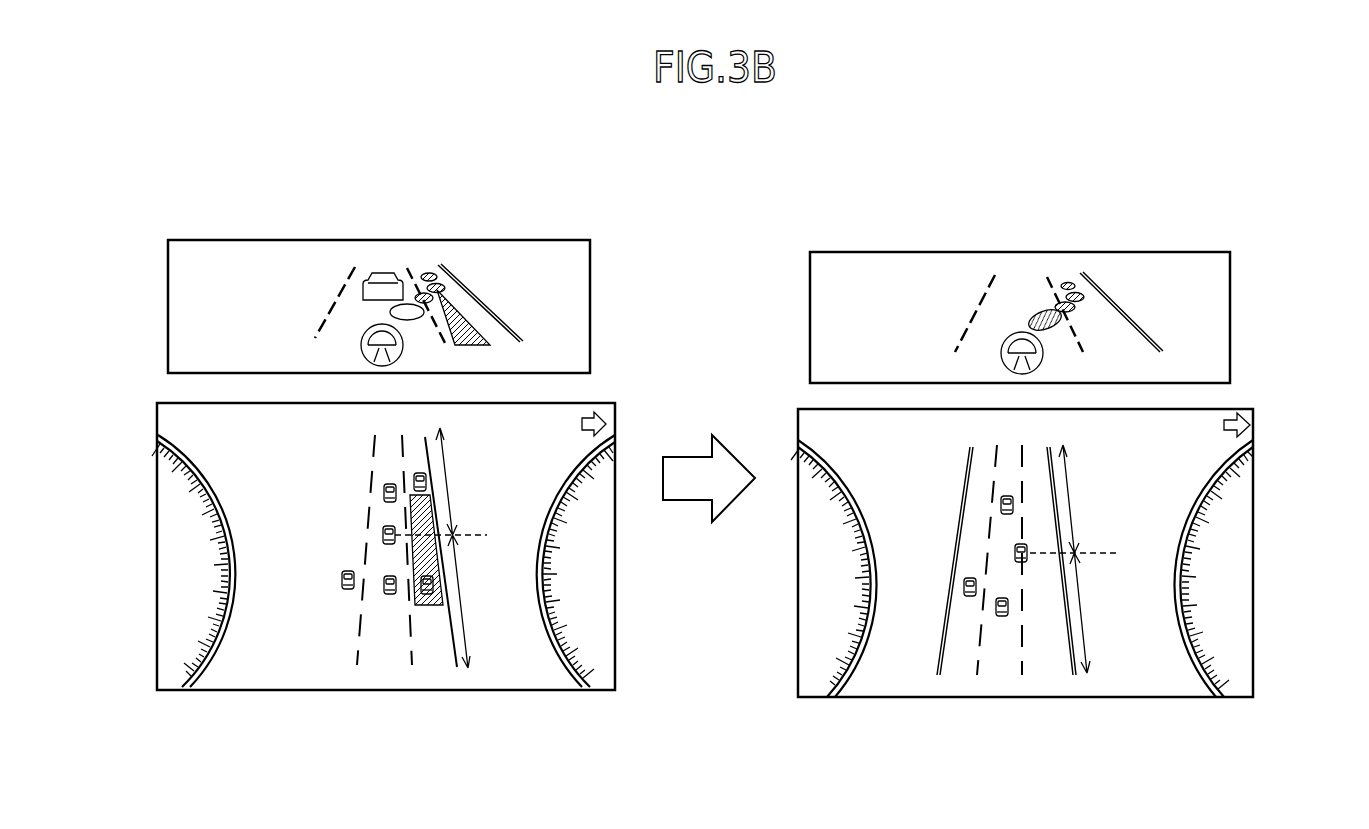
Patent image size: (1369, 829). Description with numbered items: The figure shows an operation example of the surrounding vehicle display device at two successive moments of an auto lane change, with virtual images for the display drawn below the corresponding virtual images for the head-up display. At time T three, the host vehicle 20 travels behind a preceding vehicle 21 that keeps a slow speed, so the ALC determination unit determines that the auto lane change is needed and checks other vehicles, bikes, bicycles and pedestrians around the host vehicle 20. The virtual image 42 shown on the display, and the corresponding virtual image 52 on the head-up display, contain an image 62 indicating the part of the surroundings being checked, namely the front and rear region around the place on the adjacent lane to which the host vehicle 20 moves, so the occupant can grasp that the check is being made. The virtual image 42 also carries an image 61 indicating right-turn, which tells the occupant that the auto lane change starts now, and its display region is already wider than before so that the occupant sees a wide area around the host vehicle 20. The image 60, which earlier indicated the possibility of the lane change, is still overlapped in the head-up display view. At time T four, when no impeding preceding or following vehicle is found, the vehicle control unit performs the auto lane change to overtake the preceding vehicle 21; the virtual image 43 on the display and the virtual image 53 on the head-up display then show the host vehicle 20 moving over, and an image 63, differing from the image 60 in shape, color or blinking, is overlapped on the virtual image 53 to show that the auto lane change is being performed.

The host vehicle 20 is at (382, 533).
The preceding vehicle 21 is at (383, 274).
The virtual image 42 is at (165, 420).
The virtual image 43 is at (1185, 483).
The virtual image 52 is at (180, 298).
The virtual image 53 is at (1213, 316).
The image indicating possibility of auto lane change 60 is at (430, 273).
The image indicating right-turn 61 is at (606, 424).
The image indicating checked surroundings 62 is at (468, 302).
The image indicating auto lane change being performed 63 is at (1068, 283).